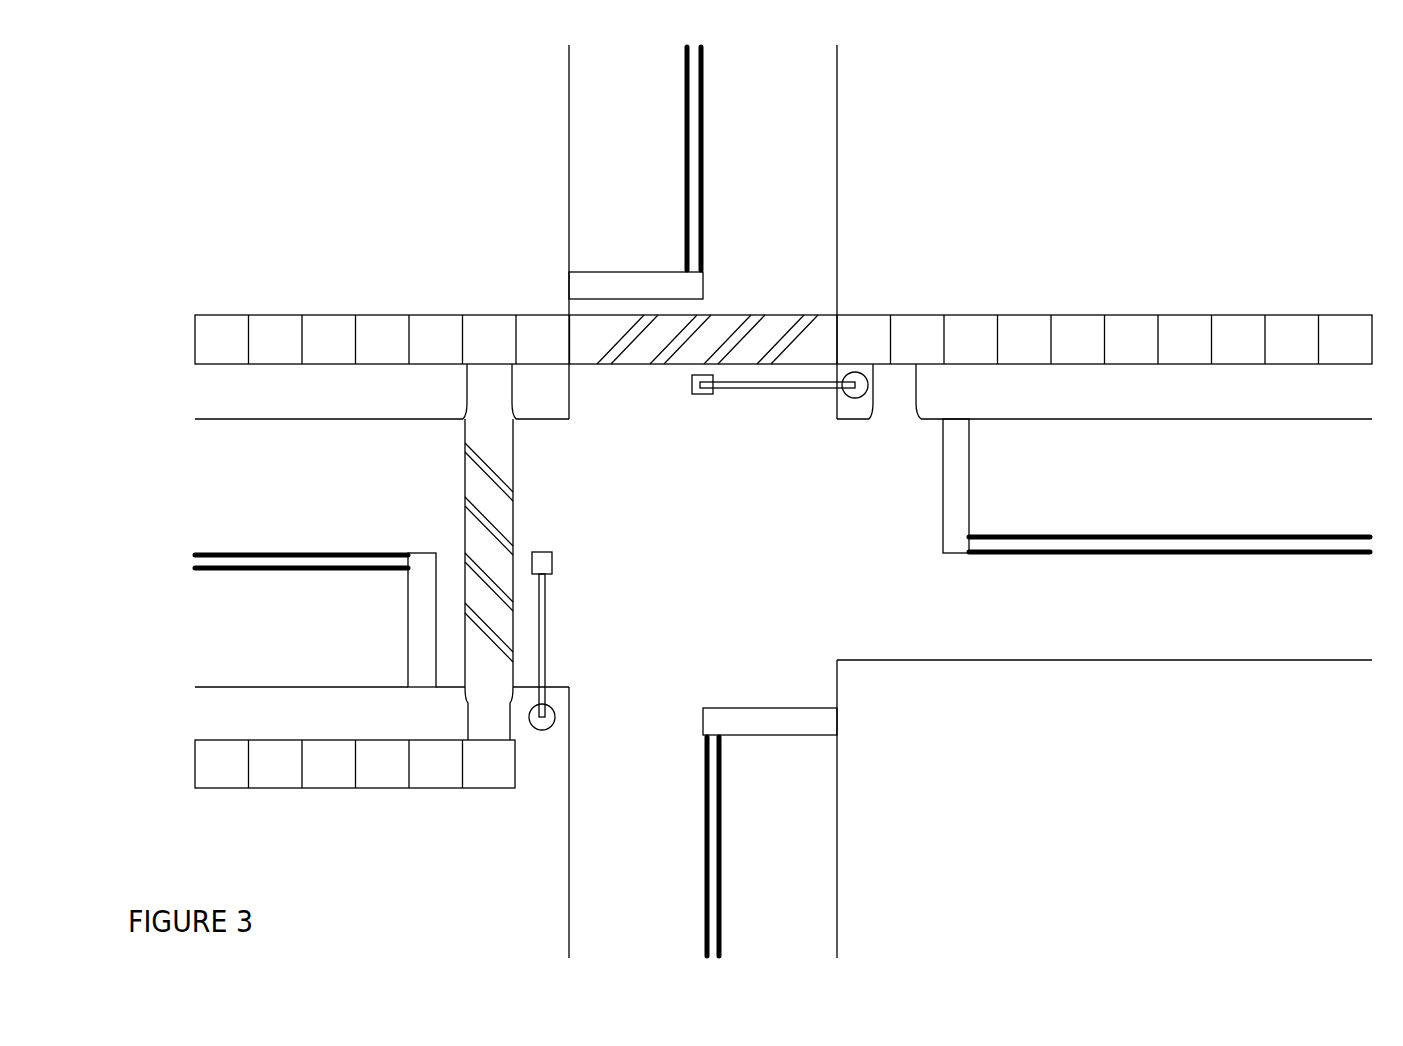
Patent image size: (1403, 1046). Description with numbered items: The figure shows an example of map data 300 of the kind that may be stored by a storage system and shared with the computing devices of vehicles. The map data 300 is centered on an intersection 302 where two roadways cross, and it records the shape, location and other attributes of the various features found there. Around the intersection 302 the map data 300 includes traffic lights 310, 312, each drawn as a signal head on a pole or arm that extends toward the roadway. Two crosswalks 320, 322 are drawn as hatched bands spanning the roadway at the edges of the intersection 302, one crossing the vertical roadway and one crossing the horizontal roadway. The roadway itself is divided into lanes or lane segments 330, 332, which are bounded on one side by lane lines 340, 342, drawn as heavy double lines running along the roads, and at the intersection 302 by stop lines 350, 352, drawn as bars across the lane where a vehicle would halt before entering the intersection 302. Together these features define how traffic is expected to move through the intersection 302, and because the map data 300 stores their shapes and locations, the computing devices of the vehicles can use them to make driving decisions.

The map data 300 is at (207, 880).
The intersection 302 is at (703, 501).
The traffic light 310 is at (553, 564).
The traffic light 312 is at (692, 390).
The crosswalk 320 is at (465, 483).
The crosswalk 322 is at (778, 315).
The lane or lane segment 330 is at (780, 900).
The lane or lane segment 332 is at (1050, 606).
The lane line 340 is at (715, 848).
The lane line 342 is at (1220, 553).
The stop line 350 is at (750, 708).
The stop line 352 is at (940, 500).